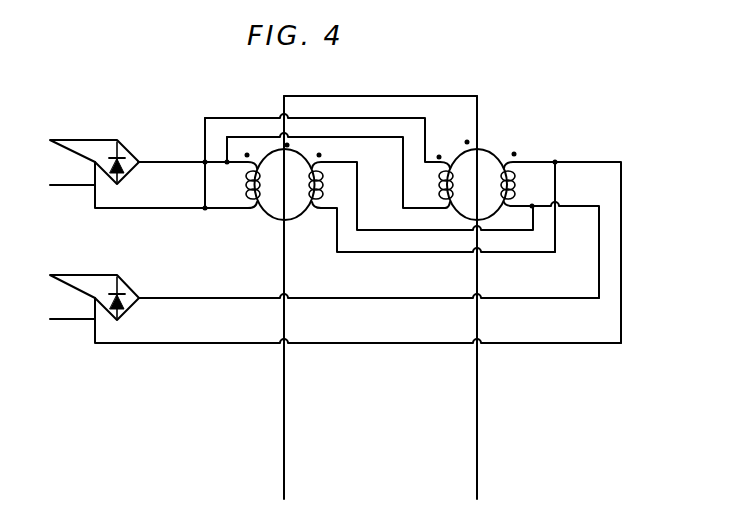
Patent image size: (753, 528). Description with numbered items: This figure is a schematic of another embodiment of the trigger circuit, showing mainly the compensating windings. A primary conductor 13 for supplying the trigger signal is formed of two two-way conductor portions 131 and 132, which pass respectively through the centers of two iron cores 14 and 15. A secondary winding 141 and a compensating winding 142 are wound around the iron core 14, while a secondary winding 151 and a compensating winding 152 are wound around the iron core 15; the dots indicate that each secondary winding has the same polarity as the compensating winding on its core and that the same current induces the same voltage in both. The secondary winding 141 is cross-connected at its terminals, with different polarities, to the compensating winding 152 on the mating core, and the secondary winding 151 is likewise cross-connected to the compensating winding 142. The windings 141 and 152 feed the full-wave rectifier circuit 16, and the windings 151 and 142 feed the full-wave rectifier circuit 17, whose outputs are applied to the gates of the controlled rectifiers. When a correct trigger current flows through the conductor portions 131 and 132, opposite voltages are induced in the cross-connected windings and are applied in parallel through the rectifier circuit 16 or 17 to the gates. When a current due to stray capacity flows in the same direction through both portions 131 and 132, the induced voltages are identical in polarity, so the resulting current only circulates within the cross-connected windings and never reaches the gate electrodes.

The primary conductor 13 is at (383, 96).
The primary conductor portion 131 is at (286, 410).
The primary conductor portion 132 is at (479, 410).
The iron core 14 is at (268, 220).
The secondary winding 141 is at (249, 194).
The compensating winding 142 is at (318, 210).
The iron core 15 is at (491, 152).
The secondary winding 151 is at (518, 175).
The compensating winding 152 is at (440, 193).
The full-wave rectifier circuit 16 is at (131, 151).
The full-wave rectifier circuit 17 is at (131, 288).